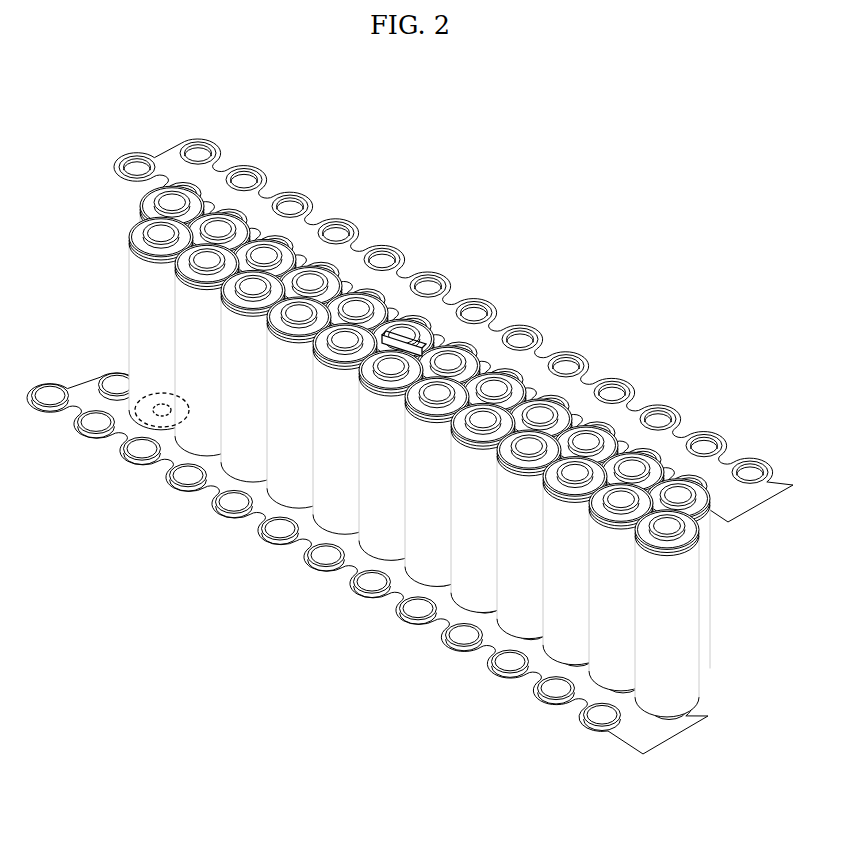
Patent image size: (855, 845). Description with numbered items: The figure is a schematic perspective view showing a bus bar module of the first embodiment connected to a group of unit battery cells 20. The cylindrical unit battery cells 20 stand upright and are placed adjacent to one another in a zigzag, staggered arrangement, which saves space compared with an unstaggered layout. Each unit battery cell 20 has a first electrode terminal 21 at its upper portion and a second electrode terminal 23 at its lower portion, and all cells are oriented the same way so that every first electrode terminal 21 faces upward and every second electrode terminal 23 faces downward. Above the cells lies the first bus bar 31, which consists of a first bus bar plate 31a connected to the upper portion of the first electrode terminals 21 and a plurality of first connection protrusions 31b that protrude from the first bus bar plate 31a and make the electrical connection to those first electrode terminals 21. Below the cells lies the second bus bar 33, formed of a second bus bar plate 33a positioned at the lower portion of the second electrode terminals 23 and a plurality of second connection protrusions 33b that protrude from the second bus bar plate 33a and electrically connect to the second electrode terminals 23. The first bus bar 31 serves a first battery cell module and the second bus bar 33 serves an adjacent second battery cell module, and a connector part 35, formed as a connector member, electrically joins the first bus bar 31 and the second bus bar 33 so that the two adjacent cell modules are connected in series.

The unit battery cell 20 is at (133, 300).
The first electrode terminal 21 is at (168, 238).
The second electrode terminal 23 is at (158, 413).
The first bus bar 31 is at (420, 198).
The first bus bar plate 31a is at (363, 253).
The first connection protrusion 31b is at (343, 234).
The second bus bar 33 is at (305, 640).
The second bus bar plate 33a is at (342, 577).
The second connection protrusion 33b is at (323, 558).
The connector part 35 is at (405, 346).